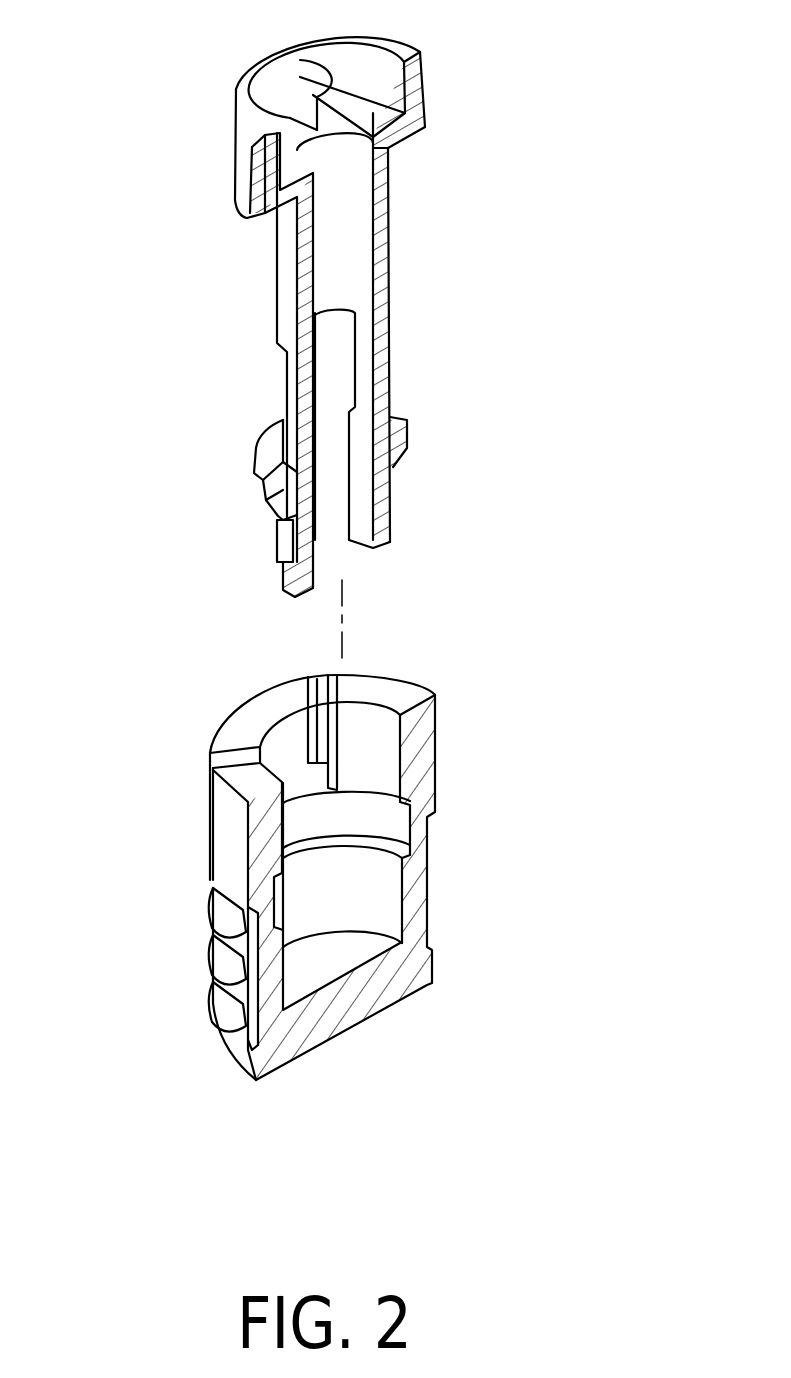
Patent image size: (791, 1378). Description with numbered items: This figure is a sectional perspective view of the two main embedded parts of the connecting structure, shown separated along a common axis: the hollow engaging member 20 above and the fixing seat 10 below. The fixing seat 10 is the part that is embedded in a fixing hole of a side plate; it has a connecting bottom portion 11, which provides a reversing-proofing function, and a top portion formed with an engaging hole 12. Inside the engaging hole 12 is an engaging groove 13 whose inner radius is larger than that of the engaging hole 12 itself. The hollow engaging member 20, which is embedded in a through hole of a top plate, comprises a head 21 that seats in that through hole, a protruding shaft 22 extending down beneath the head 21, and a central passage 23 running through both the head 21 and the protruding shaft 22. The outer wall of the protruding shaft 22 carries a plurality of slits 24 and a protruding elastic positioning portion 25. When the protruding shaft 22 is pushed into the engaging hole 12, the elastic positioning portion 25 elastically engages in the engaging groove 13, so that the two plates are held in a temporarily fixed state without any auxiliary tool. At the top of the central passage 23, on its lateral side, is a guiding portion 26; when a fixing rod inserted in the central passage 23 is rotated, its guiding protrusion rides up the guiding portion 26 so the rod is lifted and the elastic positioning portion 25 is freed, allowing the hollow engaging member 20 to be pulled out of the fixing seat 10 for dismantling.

The fixing seat 10 is at (185, 867).
The connecting bottom portion 11 is at (210, 993).
The engaging hole 12 is at (385, 758).
The engaging groove 13 is at (365, 820).
The hollow engaging member 20 is at (205, 169).
The head 21 is at (235, 125).
The protruding shaft 22 is at (277, 317).
The central passage 23 is at (349, 208).
The slits 24 is at (270, 410).
The elastic positioning portion 25 is at (262, 505).
The guiding portion 26 is at (312, 82).